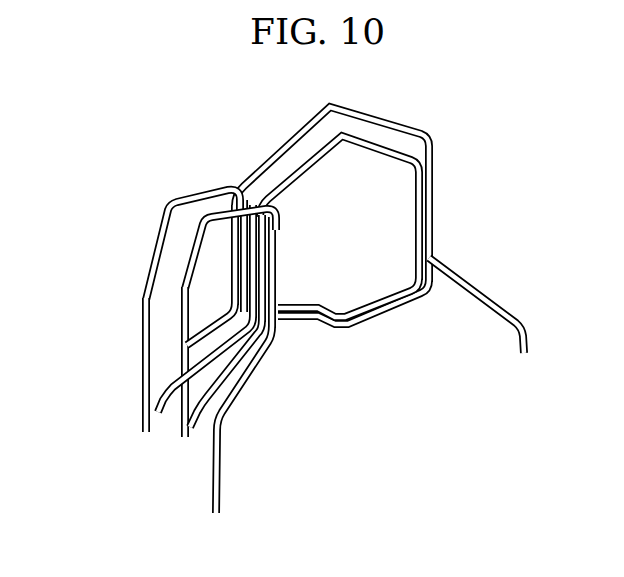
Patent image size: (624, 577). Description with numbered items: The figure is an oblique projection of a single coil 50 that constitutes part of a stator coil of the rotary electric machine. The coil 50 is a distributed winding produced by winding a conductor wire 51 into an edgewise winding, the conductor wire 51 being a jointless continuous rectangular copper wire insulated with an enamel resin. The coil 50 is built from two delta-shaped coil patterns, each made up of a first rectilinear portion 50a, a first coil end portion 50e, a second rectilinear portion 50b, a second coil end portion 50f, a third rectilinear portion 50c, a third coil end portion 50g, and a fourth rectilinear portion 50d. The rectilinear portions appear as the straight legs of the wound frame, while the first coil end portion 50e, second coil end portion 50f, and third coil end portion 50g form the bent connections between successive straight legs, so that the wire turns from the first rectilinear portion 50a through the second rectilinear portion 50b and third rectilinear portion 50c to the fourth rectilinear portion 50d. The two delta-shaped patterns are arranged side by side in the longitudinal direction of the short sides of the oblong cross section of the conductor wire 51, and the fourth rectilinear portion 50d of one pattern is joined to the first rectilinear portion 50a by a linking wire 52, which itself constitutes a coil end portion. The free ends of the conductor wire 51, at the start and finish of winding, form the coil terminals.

The coil 50 is at (150, 115).
The first rectilinear portion 50a is at (268, 274).
The second rectilinear portion 50b is at (183, 333).
The third rectilinear portion 50c is at (250, 284).
The fourth rectilinear portion 50d is at (421, 206).
The first coil end portion 50e is at (187, 263).
The second coil end portion 50f is at (247, 367).
The third coil end portion 50g is at (290, 168).
The conductor wire 51 is at (480, 280).
The linking wire 52 is at (373, 315).